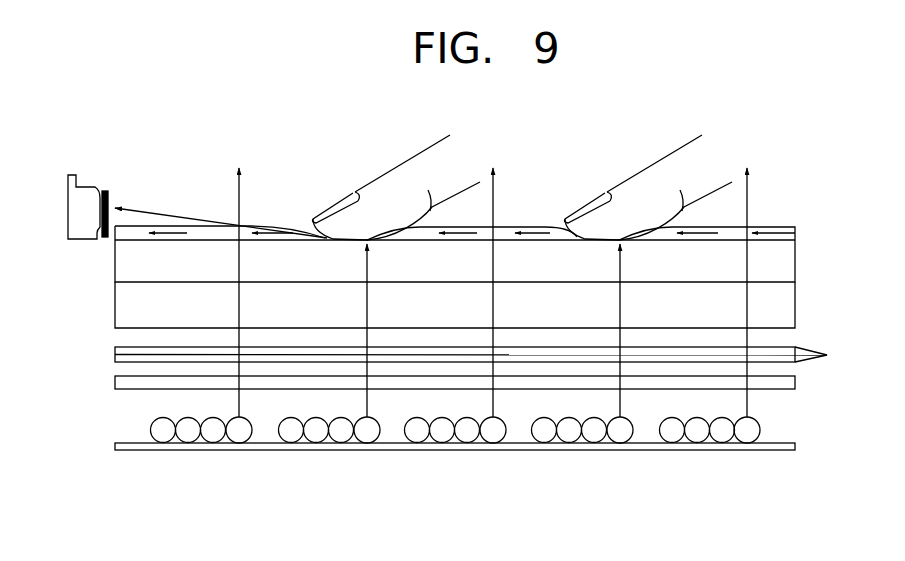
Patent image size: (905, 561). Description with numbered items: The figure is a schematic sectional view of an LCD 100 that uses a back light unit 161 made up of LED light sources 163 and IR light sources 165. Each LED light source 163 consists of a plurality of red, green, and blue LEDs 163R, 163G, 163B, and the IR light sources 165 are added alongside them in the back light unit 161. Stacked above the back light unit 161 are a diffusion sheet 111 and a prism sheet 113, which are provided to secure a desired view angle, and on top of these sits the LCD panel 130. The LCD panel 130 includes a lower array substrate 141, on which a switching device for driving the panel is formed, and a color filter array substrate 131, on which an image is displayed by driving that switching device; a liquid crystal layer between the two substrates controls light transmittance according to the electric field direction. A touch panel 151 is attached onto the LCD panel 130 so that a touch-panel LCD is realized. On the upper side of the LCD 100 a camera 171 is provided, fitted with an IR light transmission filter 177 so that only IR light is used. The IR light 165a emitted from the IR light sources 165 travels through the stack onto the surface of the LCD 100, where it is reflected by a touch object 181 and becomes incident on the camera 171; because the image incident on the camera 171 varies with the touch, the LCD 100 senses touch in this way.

The LCD 100 is at (812, 149).
The camera 171 is at (88, 189).
The IR light transmission filter 177 is at (106, 190).
The touch object 181 is at (398, 173).
The infrared light 165a is at (749, 199).
The touch panel 151 is at (797, 232).
The color filter array substrate 131 is at (792, 262).
The lower array substrate 141 is at (488, 305).
The LCD panel 130 is at (507, 277).
The prism sheet 113 is at (489, 355).
The diffusion sheet 111 is at (797, 380).
The back light unit 161 is at (482, 468).
The red LED 163R is at (668, 444).
The green LED 163G is at (697, 444).
The blue LED 163B is at (740, 465).
The IR light source 165 is at (757, 448).
The LED light source 163 is at (701, 483).